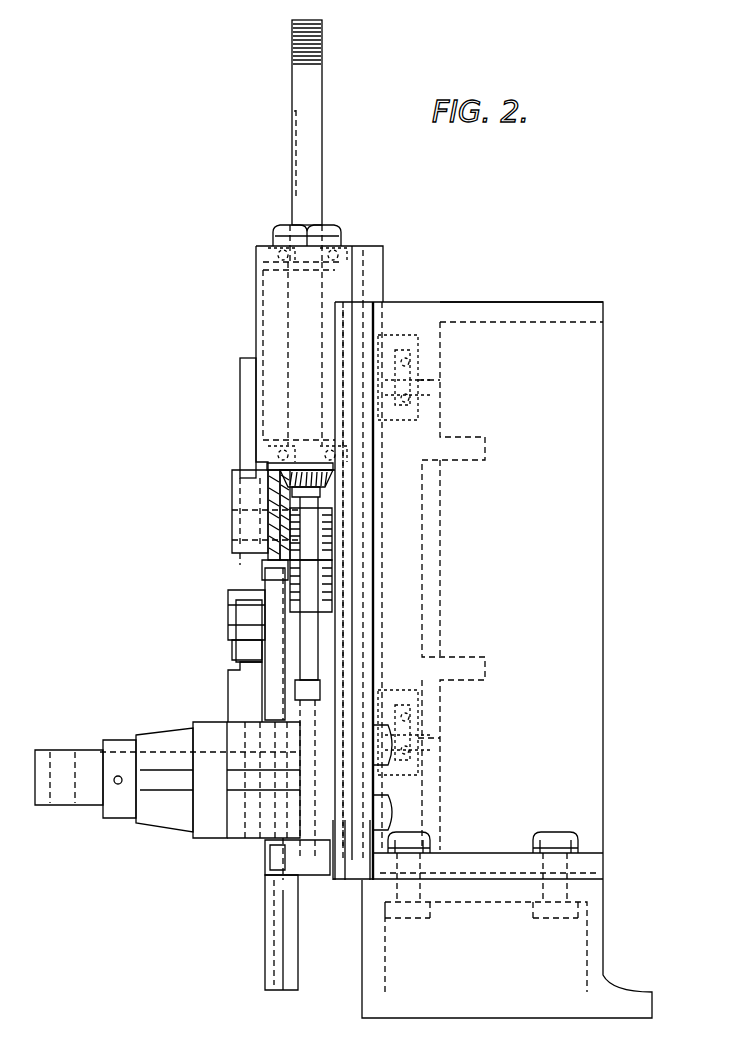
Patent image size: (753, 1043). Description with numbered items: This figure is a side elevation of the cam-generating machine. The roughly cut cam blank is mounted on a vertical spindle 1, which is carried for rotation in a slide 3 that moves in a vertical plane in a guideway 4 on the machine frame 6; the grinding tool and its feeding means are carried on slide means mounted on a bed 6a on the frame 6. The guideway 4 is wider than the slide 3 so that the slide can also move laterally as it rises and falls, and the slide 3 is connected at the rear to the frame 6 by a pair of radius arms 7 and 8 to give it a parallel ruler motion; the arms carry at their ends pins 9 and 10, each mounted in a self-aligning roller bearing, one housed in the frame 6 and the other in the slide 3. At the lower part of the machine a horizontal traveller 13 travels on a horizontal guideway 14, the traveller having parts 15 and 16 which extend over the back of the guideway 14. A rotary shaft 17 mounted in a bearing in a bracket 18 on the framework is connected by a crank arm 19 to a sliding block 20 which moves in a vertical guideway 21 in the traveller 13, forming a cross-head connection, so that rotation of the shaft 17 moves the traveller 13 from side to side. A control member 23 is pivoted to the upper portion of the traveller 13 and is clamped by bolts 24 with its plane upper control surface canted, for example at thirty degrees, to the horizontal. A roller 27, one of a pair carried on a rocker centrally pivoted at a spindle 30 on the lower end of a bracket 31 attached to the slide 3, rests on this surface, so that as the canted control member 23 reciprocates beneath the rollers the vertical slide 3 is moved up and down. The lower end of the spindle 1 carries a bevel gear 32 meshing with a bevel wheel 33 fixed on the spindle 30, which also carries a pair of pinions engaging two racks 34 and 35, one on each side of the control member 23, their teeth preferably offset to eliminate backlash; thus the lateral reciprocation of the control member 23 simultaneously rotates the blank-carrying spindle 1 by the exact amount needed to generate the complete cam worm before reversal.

The vertical spindle 1 is at (292, 132).
The slide 3 is at (378, 272).
The guideway 4 is at (337, 347).
The frame 6 is at (603, 572).
The bed 6a is at (521, 302).
The radius arm 7 is at (395, 345).
The radius arm 8 is at (390, 692).
The pin 9 is at (340, 370).
The pin 10 is at (453, 740).
The horizontal traveller 13 is at (280, 633).
The horizontal guideway 14 is at (325, 795).
The part of traveller 15 is at (282, 718).
The part of traveller 16 is at (280, 842).
The rotary shaft 17 is at (91, 752).
The bracket 18 is at (176, 733).
The crank arm 19 is at (235, 680).
The sliding block 20 is at (262, 652).
The vertical guideway 21 is at (272, 943).
The control member 23 is at (308, 587).
The bolt 24 is at (250, 610).
The roller 27 is at (306, 512).
The spindle 30 is at (240, 520).
The bracket 31 is at (242, 418).
The bevel gear 32 is at (282, 468).
The bevel wheel 33 is at (284, 482).
The rack 34 is at (290, 560).
The rack 35 is at (316, 555).